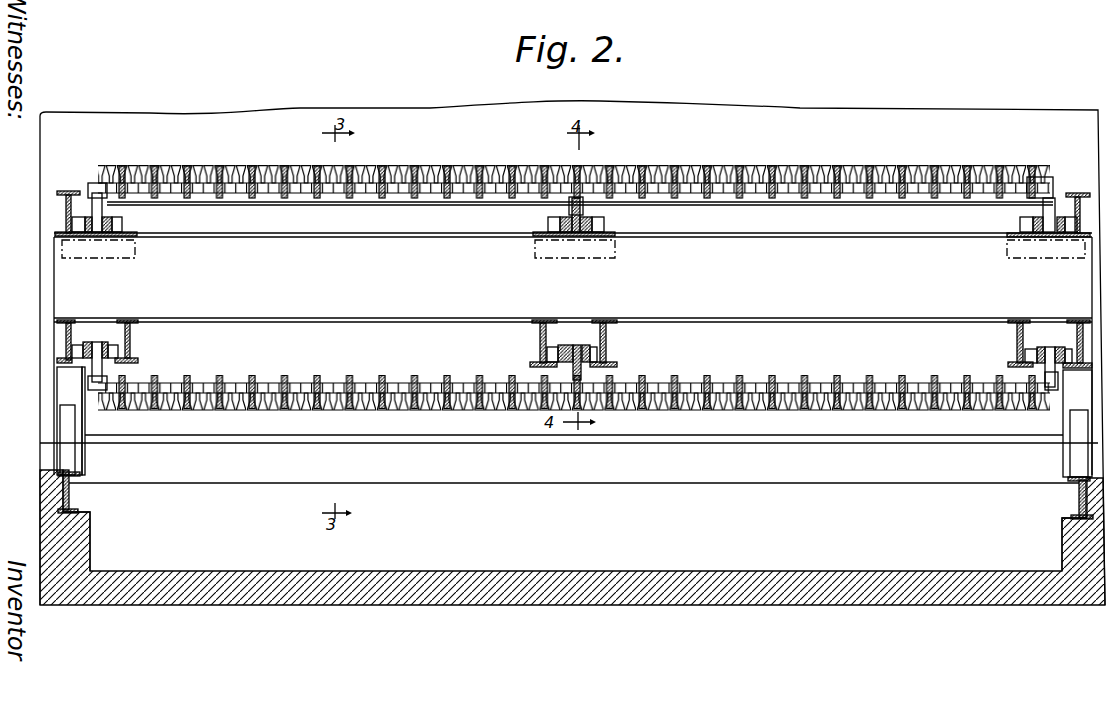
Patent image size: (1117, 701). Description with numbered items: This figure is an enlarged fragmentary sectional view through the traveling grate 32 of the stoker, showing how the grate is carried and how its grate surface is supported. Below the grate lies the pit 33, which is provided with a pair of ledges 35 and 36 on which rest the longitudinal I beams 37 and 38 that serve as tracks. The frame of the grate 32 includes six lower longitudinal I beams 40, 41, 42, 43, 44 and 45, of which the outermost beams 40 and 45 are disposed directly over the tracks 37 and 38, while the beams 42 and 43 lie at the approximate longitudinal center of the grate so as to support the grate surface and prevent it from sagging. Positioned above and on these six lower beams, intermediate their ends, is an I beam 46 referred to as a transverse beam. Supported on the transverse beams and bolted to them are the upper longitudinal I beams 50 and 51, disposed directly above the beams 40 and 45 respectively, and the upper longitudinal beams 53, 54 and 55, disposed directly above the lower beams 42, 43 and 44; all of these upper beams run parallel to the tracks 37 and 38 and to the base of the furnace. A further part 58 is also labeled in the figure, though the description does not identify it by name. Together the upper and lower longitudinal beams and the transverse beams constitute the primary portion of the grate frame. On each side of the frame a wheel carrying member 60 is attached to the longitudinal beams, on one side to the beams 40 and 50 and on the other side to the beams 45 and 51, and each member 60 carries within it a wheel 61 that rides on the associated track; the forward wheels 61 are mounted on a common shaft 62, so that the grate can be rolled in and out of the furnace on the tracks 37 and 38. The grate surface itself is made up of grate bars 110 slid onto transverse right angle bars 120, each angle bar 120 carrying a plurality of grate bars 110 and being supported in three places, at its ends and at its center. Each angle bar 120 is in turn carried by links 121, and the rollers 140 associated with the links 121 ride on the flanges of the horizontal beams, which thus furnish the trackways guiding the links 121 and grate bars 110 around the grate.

The traveling grate 32 is at (906, 99).
The pit 33 is at (633, 571).
The ledge 35 is at (80, 527).
The ledge 36 is at (1067, 528).
The track 37 is at (72, 490).
The track 38 is at (1078, 502).
The longitudinal I beam 40 is at (68, 320).
The longitudinal I beam 41 is at (125, 320).
The longitudinal I beam 42 is at (540, 320).
The longitudinal I beam 43 is at (607, 320).
The longitudinal I beam 44 is at (1017, 322).
The longitudinal I beam 45 is at (1078, 323).
The transverse beam 46 is at (397, 292).
The longitudinal I beam 50 is at (64, 202).
The longitudinal I beam 51 is at (1077, 193).
The longitudinal beam 53 is at (536, 232).
The longitudinal beam 54 is at (602, 233).
The longitudinal beam 55 is at (1010, 228).
The base plate 58 is at (135, 233).
The wheel carrying member 60 is at (57, 392).
The wheel 61 is at (65, 430).
The common shaft 62 is at (556, 443).
The grate bar 110 is at (445, 165).
The right angle bar 120 is at (328, 204).
The link 121 is at (108, 212).
The roller 140 is at (78, 226).